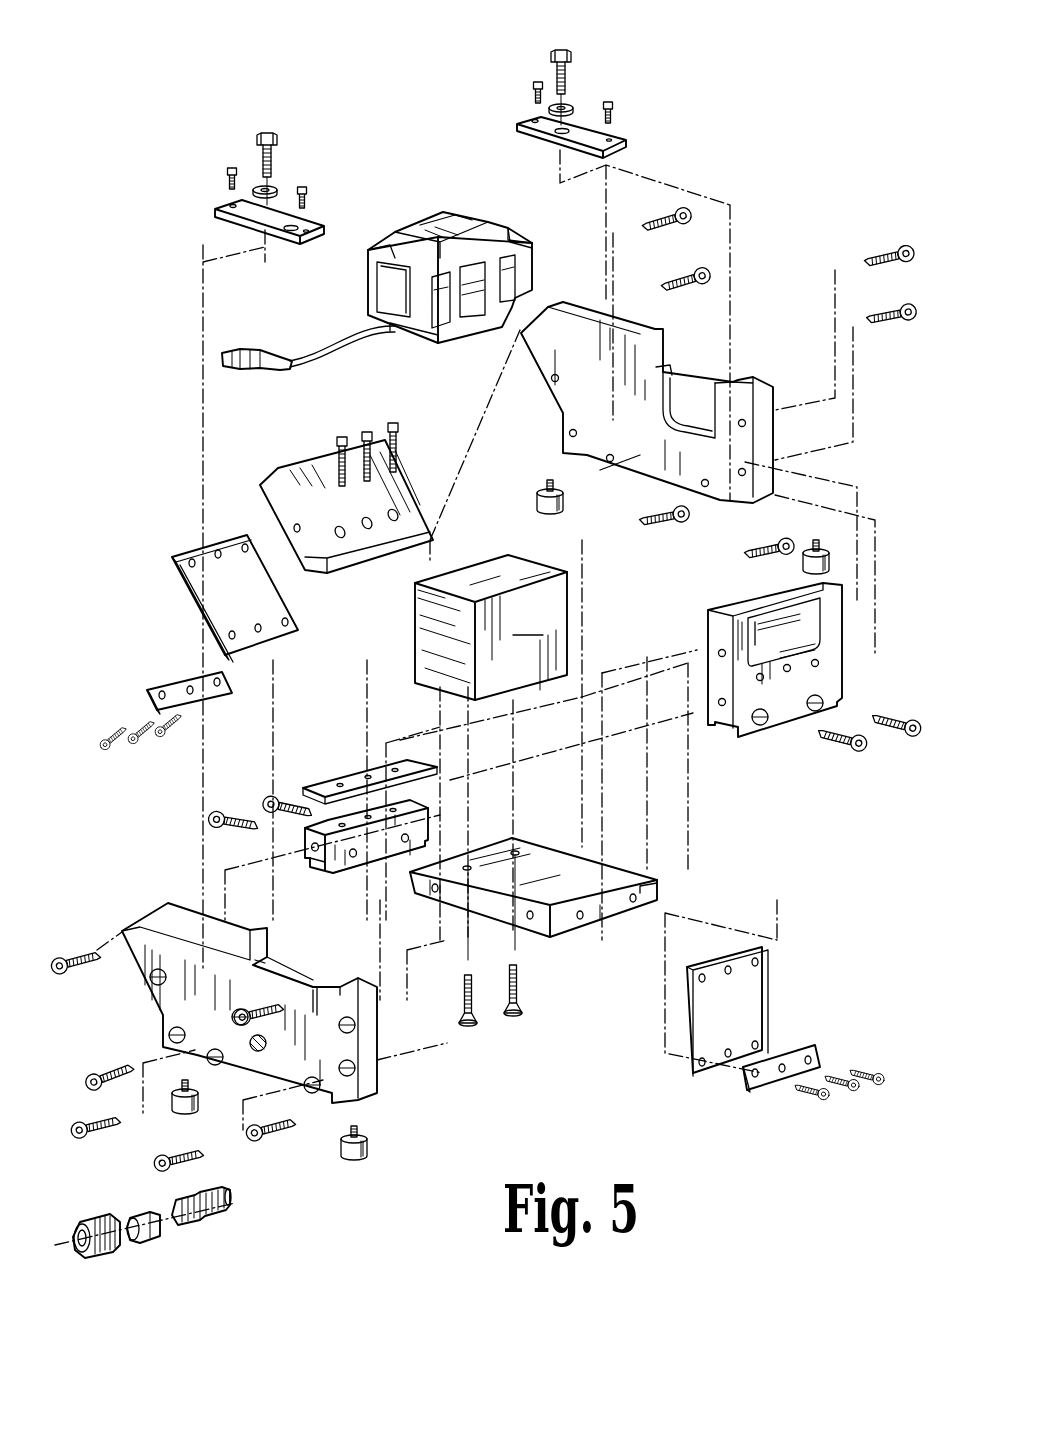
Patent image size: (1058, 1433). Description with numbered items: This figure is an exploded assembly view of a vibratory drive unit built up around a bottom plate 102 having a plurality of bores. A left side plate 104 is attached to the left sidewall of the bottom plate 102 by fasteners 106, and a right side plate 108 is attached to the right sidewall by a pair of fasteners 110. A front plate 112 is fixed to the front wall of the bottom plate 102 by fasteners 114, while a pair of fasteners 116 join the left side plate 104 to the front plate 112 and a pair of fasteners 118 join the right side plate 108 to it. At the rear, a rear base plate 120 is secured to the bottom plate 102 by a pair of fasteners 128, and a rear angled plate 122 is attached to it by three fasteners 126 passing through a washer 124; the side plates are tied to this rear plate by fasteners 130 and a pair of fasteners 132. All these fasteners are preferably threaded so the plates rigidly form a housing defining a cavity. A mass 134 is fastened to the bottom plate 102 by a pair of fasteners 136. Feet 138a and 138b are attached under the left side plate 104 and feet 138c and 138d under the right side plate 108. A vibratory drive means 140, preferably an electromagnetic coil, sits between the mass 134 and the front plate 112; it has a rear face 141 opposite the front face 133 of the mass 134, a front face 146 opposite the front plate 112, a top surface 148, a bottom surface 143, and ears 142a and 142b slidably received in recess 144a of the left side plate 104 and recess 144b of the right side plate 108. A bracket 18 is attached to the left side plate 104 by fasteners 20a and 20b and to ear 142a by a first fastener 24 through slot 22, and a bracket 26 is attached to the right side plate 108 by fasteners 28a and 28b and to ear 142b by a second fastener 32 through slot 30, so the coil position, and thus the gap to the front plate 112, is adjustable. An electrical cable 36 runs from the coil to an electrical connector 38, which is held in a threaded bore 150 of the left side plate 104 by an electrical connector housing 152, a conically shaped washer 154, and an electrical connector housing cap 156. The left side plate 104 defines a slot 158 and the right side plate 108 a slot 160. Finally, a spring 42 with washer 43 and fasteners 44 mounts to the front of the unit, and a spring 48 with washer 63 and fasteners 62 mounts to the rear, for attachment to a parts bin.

The bracket 18 is at (218, 205).
The fastener 20a is at (228, 170).
The fastener 20b is at (307, 188).
The slot 22 is at (280, 188).
The first fastener 24 is at (277, 133).
The bracket 26 is at (622, 144).
The fastener 28a is at (534, 84).
The fastener 28b is at (613, 104).
The slot 30 is at (574, 107).
The second fastener 32 is at (571, 52).
The electrical cable 36 is at (340, 357).
The electrical connector 38 is at (240, 350).
The spring 42 is at (765, 985).
The washer 43 is at (818, 1048).
The fasteners 44 is at (885, 1095).
The spring 48 is at (172, 560).
The fasteners 62 is at (162, 738).
The washer 63 is at (147, 690).
The bottom plate 102 is at (570, 937).
The left side plate 104 is at (282, 1004).
The fasteners 106 is at (160, 1165).
The right side plate 108 is at (673, 402).
The fasteners 110 is at (672, 522).
The front plate 112 is at (845, 680).
The fasteners 114 is at (910, 738).
The fasteners 116 is at (243, 1012).
The fasteners 118 is at (905, 312).
The rear base plate 120 is at (345, 872).
The rear angled plate 122 is at (352, 575).
The washer 124 is at (335, 785).
The fasteners 126 is at (390, 420).
The fasteners 128 is at (272, 800).
The fasteners 130 is at (95, 1082).
The fasteners 132 is at (702, 232).
The front face 133 is at (528, 620).
The mass 134 is at (491, 603).
The fasteners 136 is at (513, 1014).
The foot 138a is at (368, 1142).
The foot 138b is at (190, 1112).
The foot 138c is at (537, 497).
The foot 138d is at (803, 568).
The vibratory drive means 140 is at (447, 285).
The rear face 141 is at (370, 252).
The ear 142a is at (375, 282).
The ear 142b is at (530, 243).
The bottom surface 143 is at (445, 350).
The recess 144a is at (305, 985).
The recess 144b is at (695, 415).
The front face 146 is at (475, 325).
The top surface 148 is at (440, 222).
The bore 150 is at (258, 1052).
The electrical connector housing 152 is at (216, 1222).
The conically shaped washer 154 is at (158, 1240).
The electrical connector housing cap 156 is at (112, 1255).
The slot 158 is at (320, 1018).
The slot 160 is at (720, 382).